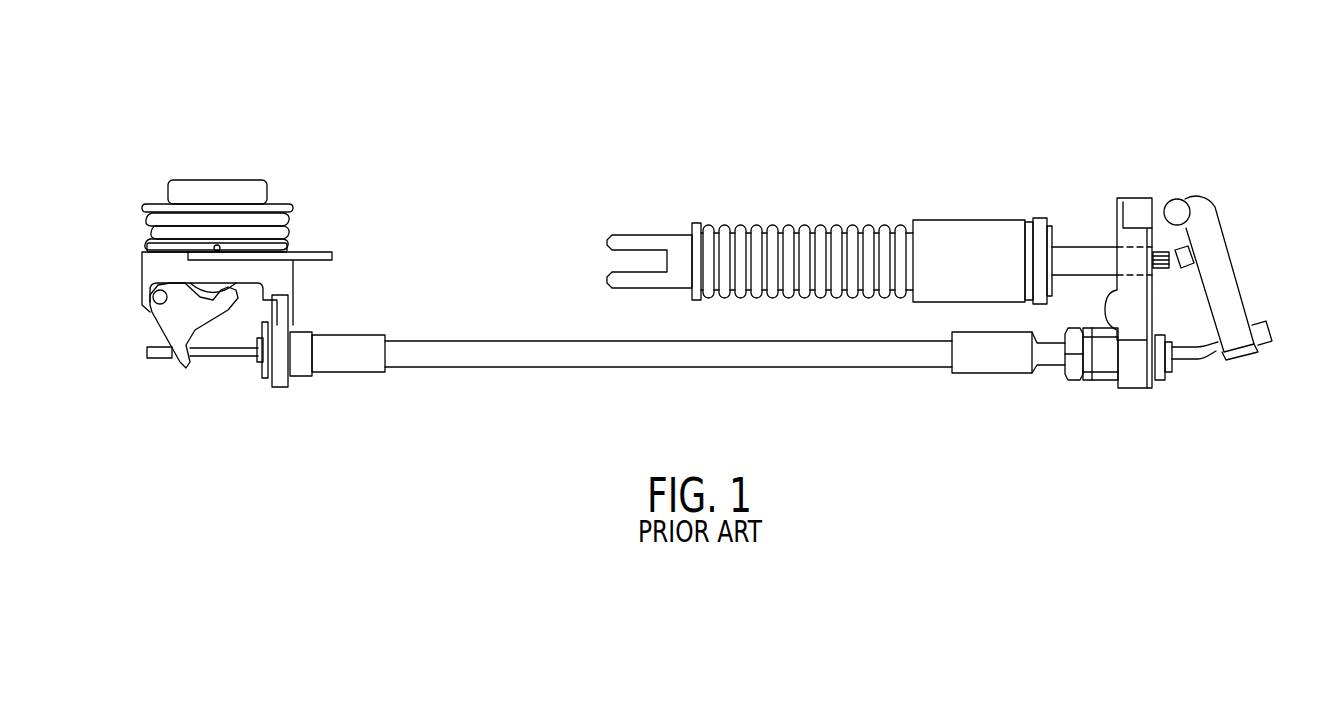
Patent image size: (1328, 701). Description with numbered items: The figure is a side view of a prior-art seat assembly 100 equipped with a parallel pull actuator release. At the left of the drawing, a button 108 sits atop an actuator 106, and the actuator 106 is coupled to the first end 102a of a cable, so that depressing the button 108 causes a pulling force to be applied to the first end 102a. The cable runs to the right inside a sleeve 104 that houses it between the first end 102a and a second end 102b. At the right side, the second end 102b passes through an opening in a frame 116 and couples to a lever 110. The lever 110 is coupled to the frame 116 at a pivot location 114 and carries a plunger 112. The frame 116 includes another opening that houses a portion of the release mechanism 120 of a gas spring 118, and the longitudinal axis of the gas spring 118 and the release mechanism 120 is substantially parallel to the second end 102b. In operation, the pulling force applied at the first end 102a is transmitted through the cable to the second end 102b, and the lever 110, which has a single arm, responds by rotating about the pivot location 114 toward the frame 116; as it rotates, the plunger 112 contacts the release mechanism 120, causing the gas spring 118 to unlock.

The seat assembly 100 is at (466, 87).
The first end 102a is at (252, 352).
The second end 102b is at (1210, 348).
The sleeve 104 is at (497, 353).
The actuator 106 is at (170, 318).
The button 108 is at (218, 192).
The lever 110 is at (1228, 316).
The plunger 112 is at (1185, 258).
The pivot location 114 is at (1176, 208).
The frame 116 is at (1128, 215).
The gas spring 118 is at (977, 220).
The release mechanism 120 is at (1165, 252).